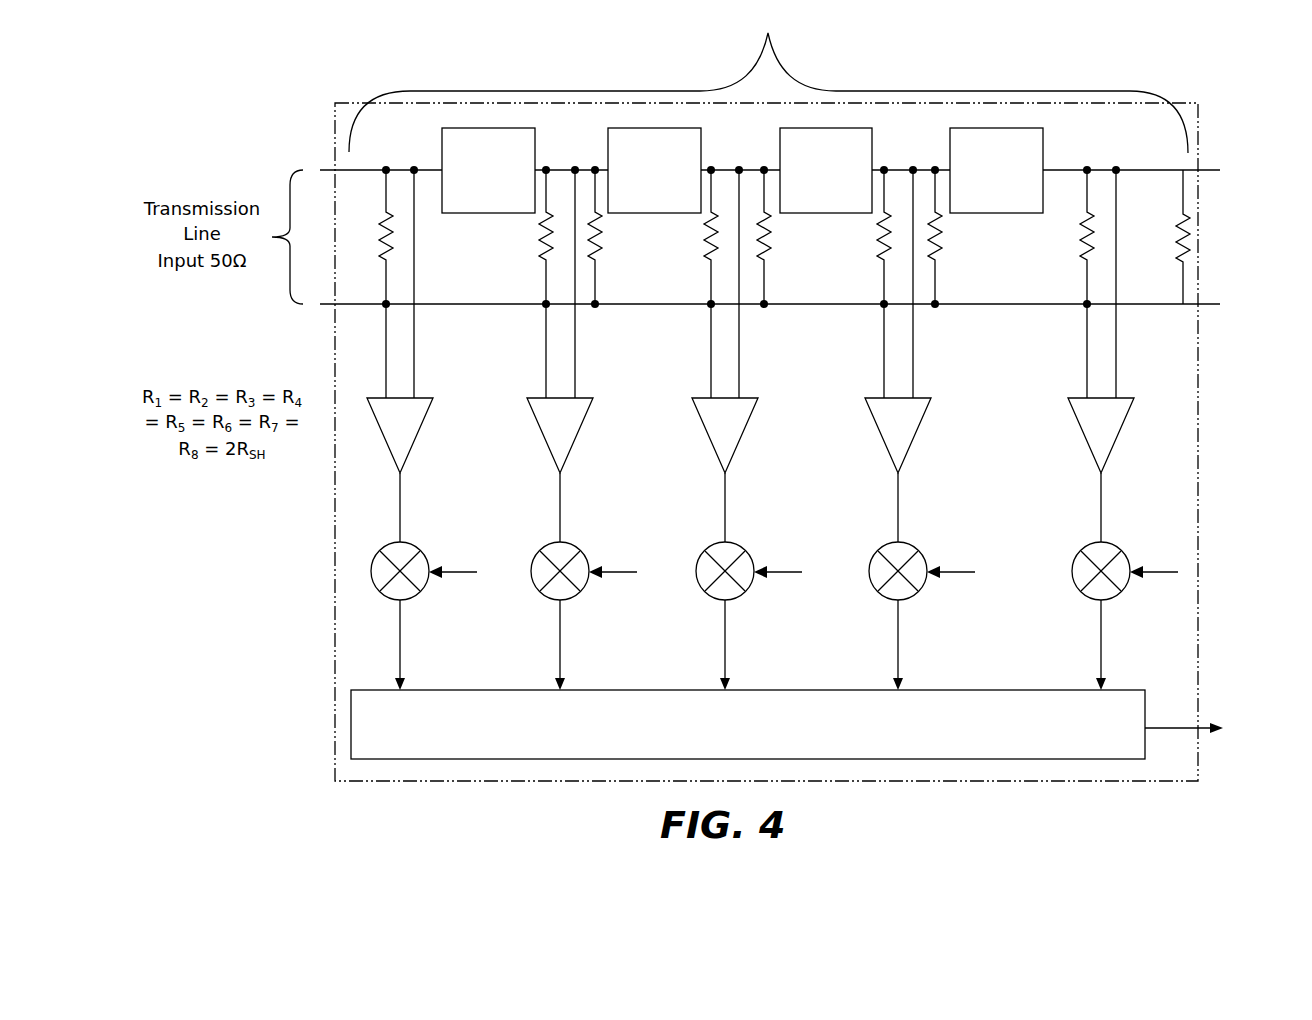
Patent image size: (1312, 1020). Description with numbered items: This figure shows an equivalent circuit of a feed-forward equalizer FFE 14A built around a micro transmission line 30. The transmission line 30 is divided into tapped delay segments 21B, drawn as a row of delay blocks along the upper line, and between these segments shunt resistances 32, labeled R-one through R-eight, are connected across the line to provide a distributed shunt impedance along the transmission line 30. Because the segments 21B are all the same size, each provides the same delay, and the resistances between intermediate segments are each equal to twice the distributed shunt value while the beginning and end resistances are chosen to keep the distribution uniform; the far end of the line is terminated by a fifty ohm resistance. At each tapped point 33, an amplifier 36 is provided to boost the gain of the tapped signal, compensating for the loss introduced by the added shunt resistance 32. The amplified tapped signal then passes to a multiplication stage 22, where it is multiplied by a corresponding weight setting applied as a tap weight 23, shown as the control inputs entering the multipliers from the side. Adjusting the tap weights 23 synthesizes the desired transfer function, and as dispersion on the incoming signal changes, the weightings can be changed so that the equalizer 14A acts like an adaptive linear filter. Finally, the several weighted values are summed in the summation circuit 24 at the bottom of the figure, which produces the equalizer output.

The FFE 14A is at (1190, 103).
The micro transmission line 30 is at (768, 33).
The tapped delay segment 21B is at (618, 132).
The shunt resistance 32 is at (383, 225).
The tapped point 33 is at (415, 342).
The amplifier 36 is at (750, 470).
The multiplication stage 22 is at (390, 551).
The tap weight 23 is at (458, 572).
The summation circuit 24 is at (677, 707).